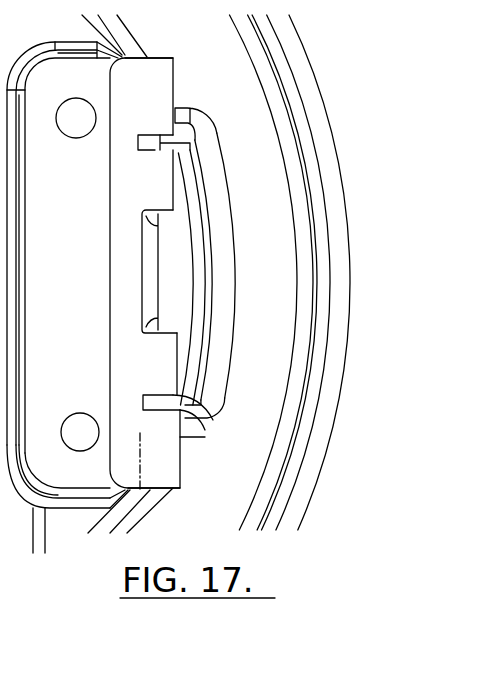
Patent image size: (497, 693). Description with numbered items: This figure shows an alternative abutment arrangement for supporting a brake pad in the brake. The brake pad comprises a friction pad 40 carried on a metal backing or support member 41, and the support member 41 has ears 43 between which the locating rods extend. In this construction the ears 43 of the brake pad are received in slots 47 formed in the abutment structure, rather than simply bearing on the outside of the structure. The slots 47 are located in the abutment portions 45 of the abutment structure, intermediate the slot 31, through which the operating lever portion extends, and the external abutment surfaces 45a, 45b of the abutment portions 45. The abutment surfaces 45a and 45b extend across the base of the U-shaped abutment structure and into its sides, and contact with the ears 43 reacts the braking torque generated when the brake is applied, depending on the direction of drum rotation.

The aperture 31 is at (152, 225).
The friction pad 40 is at (225, 268).
The metal backing/support member 41 is at (203, 298).
The ears 43 is at (157, 143).
The abutment portions 45 is at (155, 108).
The abutment surface 45a is at (155, 58).
The abutment surface 45b is at (163, 490).
The slots 47 is at (153, 150).